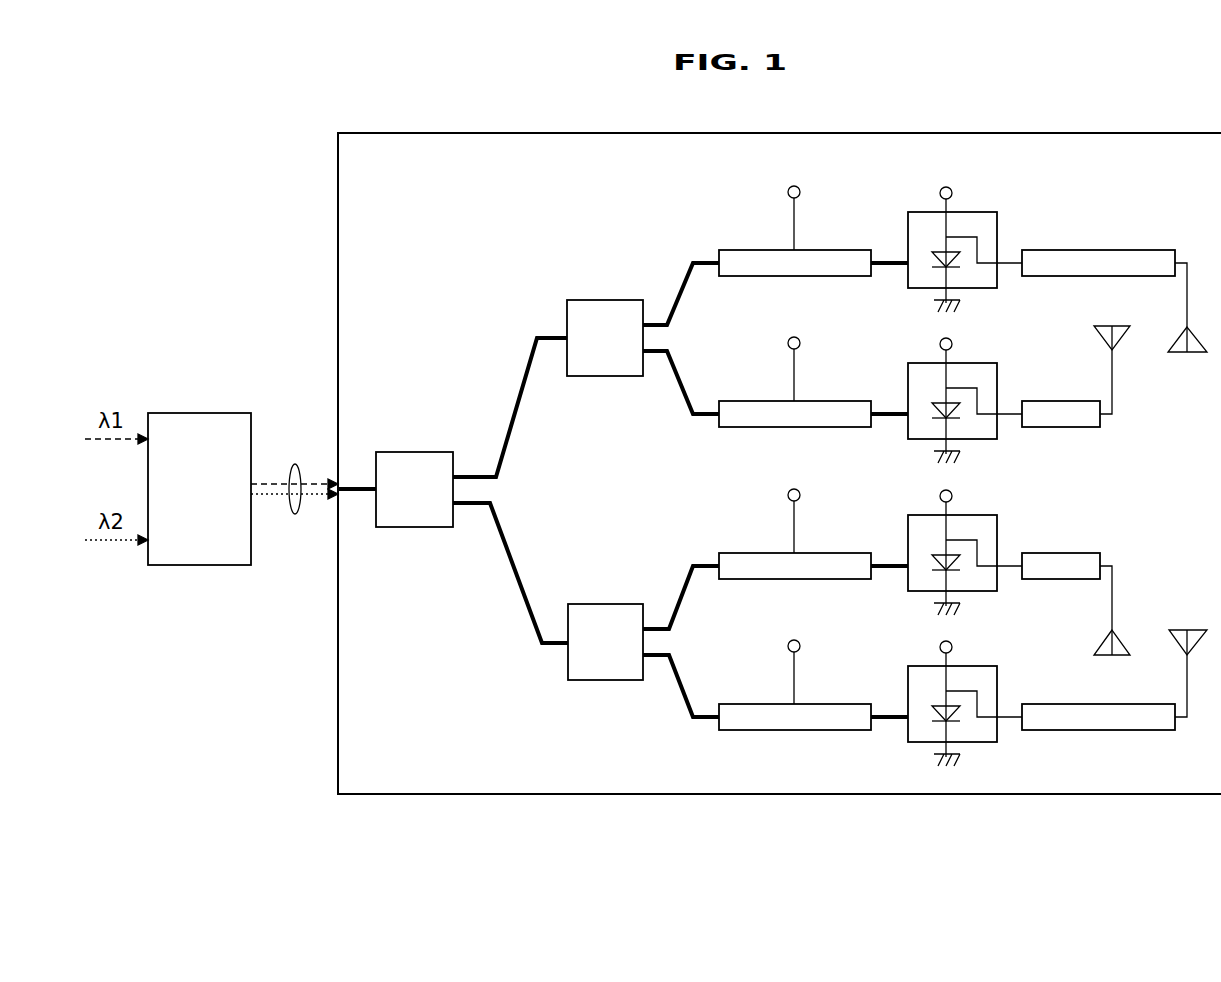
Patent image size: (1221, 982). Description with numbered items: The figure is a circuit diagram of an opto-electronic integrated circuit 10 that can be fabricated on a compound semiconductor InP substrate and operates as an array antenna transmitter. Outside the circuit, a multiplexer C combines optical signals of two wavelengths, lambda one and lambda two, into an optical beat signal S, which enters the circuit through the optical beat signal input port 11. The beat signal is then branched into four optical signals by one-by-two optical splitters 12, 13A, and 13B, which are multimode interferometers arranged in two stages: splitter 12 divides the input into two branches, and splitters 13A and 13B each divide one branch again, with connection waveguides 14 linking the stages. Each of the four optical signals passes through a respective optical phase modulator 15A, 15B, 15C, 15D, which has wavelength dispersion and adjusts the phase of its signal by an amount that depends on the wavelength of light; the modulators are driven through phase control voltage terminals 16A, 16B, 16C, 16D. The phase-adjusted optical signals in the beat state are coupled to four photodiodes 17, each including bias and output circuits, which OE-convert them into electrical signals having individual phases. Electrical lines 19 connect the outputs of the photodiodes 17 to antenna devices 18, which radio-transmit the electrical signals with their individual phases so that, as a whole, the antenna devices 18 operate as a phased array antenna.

The opto-electronic integrated circuit 10 is at (388, 133).
The optical beat signal input port 11 is at (342, 491).
The 1×2 optical splitter 12 is at (490, 437).
The 1×2 optical splitter 13A is at (668, 288).
The 1×2 optical splitter 13B is at (668, 594).
The connection waveguides 14 is at (540, 327).
The optical phase modulator 15A is at (745, 250).
The optical phase modulator 15B is at (745, 401).
The optical phase modulator 15C is at (745, 553).
The optical phase modulator 15D is at (745, 704).
The phase control voltage terminal 16A is at (801, 191).
The phase control voltage terminal 16B is at (801, 342).
The phase control voltage terminal 16C is at (801, 494).
The phase control voltage terminal 16D is at (801, 645).
The photodiode 17 is at (960, 211).
The antenna device 18 is at (1186, 302).
The electrical line 19 is at (1060, 250).
The multiplexer C is at (199, 413).
The optical beat signal S is at (295, 461).